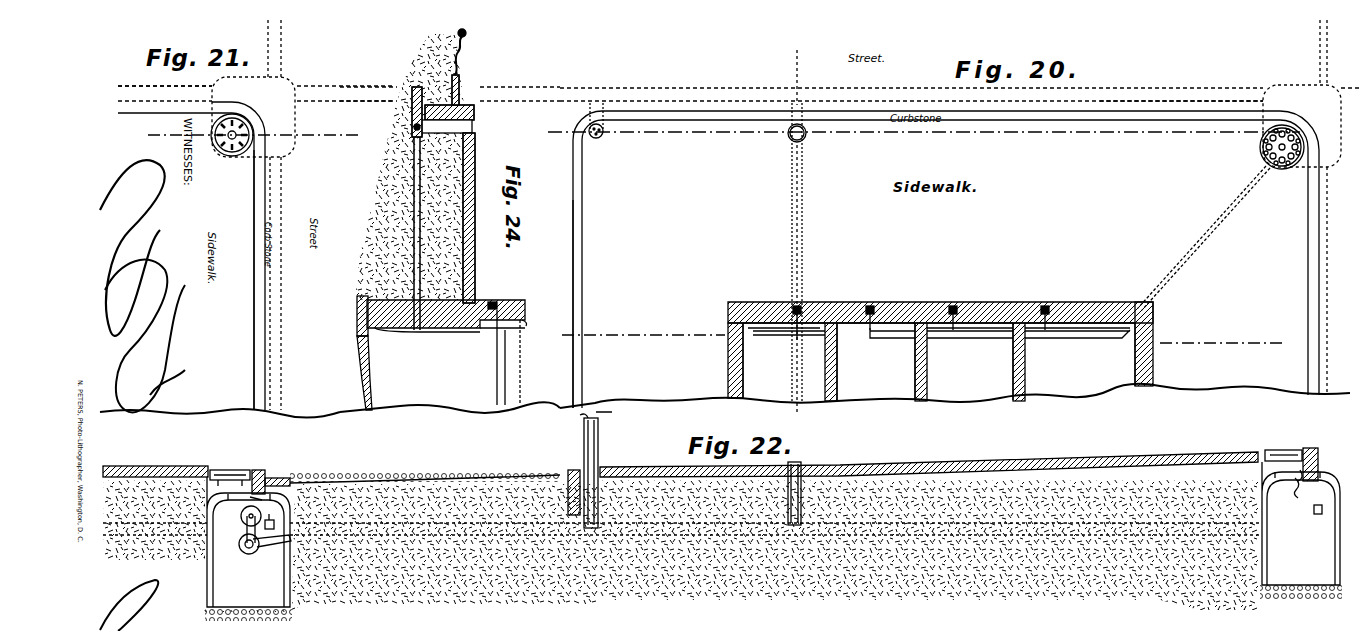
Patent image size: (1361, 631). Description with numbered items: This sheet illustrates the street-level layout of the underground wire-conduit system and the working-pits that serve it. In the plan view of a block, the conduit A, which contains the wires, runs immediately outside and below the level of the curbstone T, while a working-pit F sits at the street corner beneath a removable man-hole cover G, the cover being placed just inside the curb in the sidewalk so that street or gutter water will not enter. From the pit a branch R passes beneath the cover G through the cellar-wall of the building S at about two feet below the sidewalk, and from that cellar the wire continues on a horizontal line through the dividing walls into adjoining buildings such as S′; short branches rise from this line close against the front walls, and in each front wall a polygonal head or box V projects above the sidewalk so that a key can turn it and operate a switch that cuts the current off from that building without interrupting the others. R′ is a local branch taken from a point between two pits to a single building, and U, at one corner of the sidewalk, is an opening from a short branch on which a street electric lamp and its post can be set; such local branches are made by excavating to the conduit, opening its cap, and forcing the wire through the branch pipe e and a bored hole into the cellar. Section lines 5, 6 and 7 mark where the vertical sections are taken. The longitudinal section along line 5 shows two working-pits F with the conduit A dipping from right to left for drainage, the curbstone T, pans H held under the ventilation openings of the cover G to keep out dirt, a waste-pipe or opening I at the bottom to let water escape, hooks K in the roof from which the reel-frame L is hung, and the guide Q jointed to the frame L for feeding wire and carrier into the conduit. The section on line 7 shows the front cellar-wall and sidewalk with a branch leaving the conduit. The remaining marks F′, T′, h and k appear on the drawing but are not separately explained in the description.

In FIG. 21, the conduit A is at (270, 425).
In FIG. 24, the conduit A is at (412, 100).
In FIG. 20, the conduit A is at (1181, 101).
In FIG. 22, the conduit A is at (682, 526).
In FIG. 22, the working-pit F is at (773, 534).
In FIG. 21, the manhole chamber F′ is at (253, 117).
In FIG. 20, the manhole chamber F′ is at (1302, 126).
In FIG. 21, the man-hole cover G is at (236, 156).
In FIG. 20, the man-hole cover G is at (1286, 168).
In FIG. 22, the man-hole cover G is at (756, 460).
In FIG. 21, the curbstone T is at (260, 280).
In FIG. 20, the curbstone T is at (585, 304).
In FIG. 22, the curbstone T is at (265, 472).
In FIG. 20, the branch pipe T′ is at (782, 253).
In FIG. 20, the lamp-branch opening U is at (600, 137).
In FIG. 22, the lamp-branch opening U is at (598, 462).
In FIG. 24, the branch R is at (394, 208).
In FIG. 20, the branch R is at (1196, 249).
In FIG. 20, the local branch R′ is at (815, 227).
In FIG. 20, the building S is at (1083, 344).
In FIG. 20, the building S′ is at (964, 344).
In FIG. 20, the polygonal head or box V is at (921, 313).
In FIG. 22, the pan H is at (773, 482).
In FIG. 22, the waste-pipe I is at (250, 607).
In FIG. 22, the hook K is at (787, 530).
In FIG. 22, the reel-frame L is at (247, 527).
In FIG. 22, the wire and carrier guide Q is at (268, 546).
In FIG. 22, the small fitting h is at (793, 517).
In FIG. 22, the hook k is at (1294, 490).
In FIG. 24, the branch pipe e is at (405, 175).
In FIG. 21, the section line 5 is at (245, 136).
In FIG. 24, the section line 6 is at (636, 336).
In FIG. 20, the section line 6 is at (1228, 345).
In FIG. 20, the section line 7 is at (793, 231).